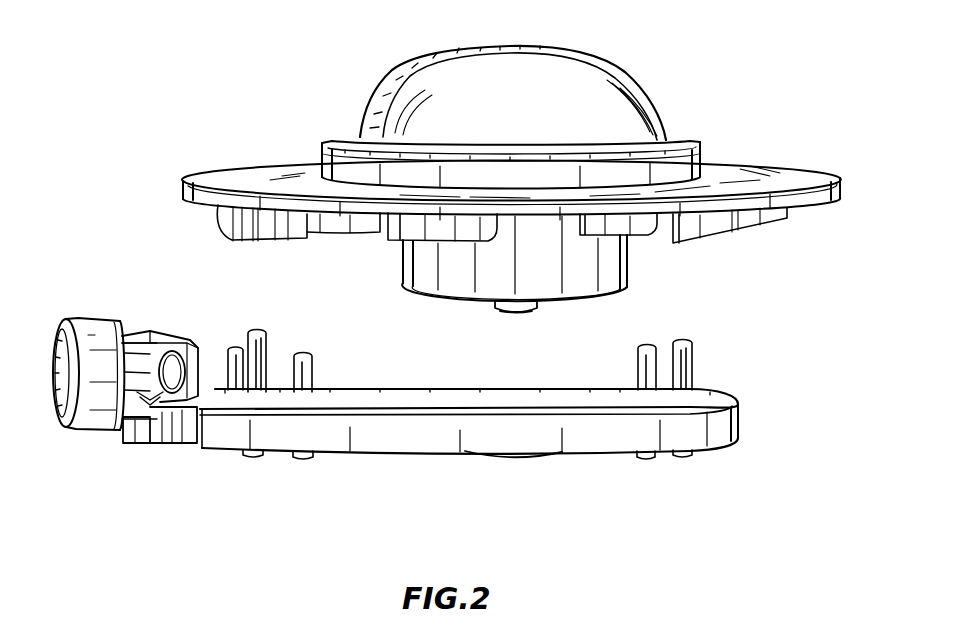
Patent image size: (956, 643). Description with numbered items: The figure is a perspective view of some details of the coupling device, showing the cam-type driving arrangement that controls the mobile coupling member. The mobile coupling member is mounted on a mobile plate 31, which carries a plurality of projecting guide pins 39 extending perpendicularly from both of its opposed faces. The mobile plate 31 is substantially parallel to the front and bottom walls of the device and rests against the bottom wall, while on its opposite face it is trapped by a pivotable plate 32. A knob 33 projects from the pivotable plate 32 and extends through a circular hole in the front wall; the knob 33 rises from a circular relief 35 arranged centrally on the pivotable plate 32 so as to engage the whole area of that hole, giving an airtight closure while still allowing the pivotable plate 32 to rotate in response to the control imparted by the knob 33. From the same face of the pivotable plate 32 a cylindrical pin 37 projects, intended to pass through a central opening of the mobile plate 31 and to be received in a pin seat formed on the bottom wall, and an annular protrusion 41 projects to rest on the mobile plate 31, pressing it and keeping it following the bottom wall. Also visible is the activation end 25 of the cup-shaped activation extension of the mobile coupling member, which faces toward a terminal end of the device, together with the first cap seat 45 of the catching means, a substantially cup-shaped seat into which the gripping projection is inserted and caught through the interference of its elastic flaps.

The activation end 25 is at (99, 420).
The mobile plate 31 is at (740, 418).
The pivotable plate 32 is at (763, 183).
The knob 33 is at (603, 79).
The circular relief 35 is at (680, 163).
The cylindrical pin 37 is at (507, 317).
The guide pins 39 is at (303, 343).
The annular protrusion 41 is at (427, 270).
The first cap seat 45 is at (130, 441).